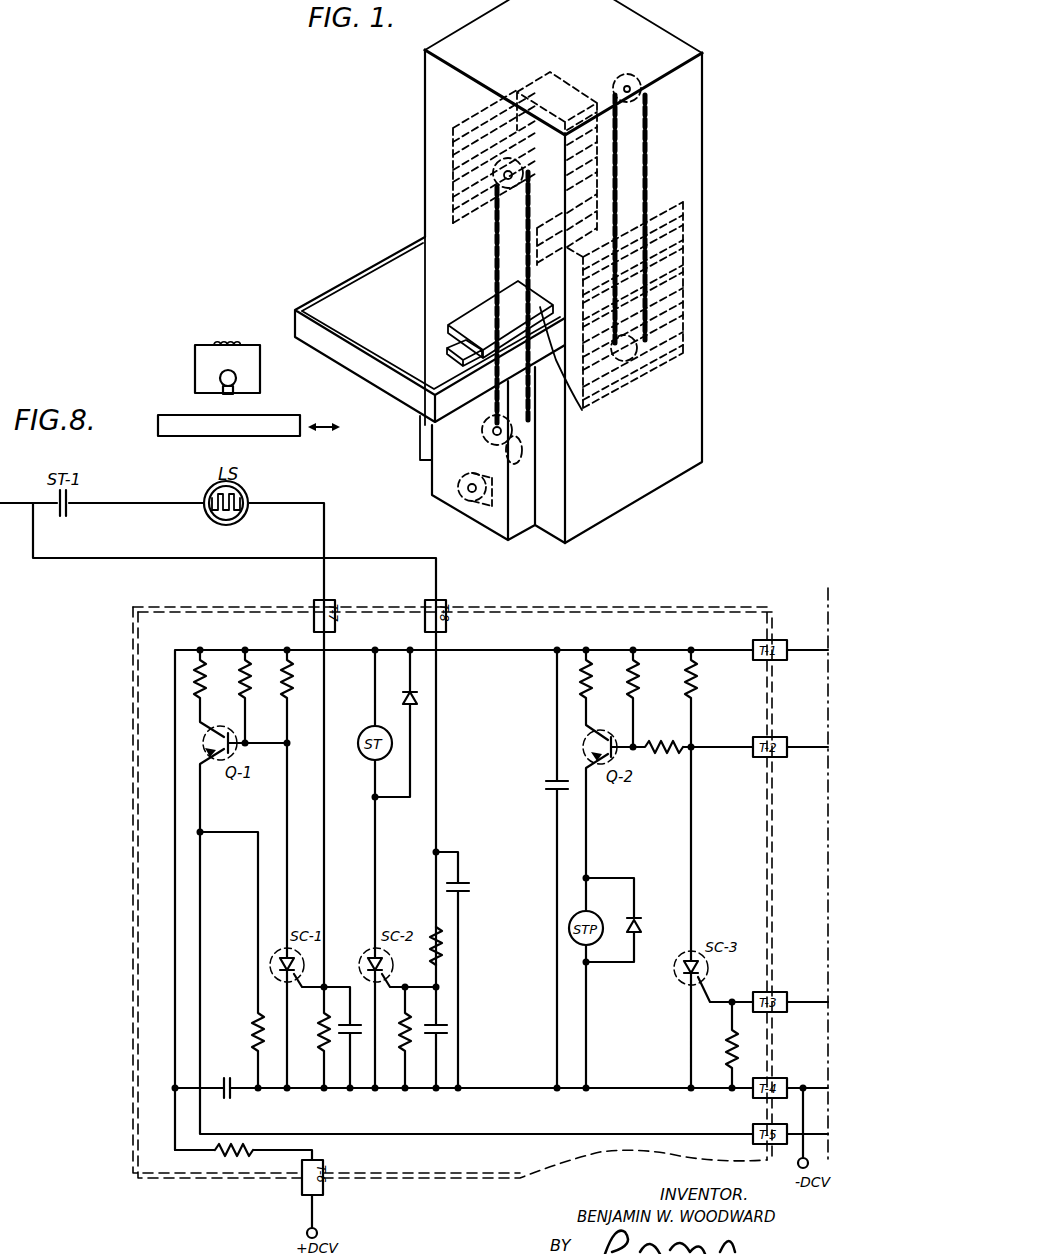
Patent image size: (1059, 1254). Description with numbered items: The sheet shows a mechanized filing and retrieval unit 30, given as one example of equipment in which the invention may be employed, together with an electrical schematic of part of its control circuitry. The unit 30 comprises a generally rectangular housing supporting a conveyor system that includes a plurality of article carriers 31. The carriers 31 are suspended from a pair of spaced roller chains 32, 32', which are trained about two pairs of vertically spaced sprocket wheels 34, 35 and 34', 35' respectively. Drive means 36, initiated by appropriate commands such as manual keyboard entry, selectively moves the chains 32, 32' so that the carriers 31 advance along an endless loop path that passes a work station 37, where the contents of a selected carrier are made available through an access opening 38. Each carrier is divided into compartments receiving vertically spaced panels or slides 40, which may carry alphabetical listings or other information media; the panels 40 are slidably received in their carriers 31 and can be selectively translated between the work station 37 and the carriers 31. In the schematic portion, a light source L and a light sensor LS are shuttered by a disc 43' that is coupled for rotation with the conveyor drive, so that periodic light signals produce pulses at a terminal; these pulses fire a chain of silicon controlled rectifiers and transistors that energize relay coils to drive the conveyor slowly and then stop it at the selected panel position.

In FIG. 1, the mechanized filing and retrieval unit 30 is at (400, 167).
In FIG. 1, the article carriers 31 is at (528, 84).
In FIG. 1, the roller chain 32 is at (480, 298).
In FIG. 1, the roller chain 32' is at (656, 220).
In FIG. 1, the sprocket wheel 34 is at (506, 152).
In FIG. 1, the sprocket wheel 34' is at (642, 71).
In FIG. 1, the sprocket wheel 35 is at (543, 440).
In FIG. 1, the sprocket wheel 35' is at (639, 376).
In FIG. 1, the drive means 36 is at (473, 508).
In FIG. 1, the work station 37 is at (382, 300).
In FIG. 1, the access opening 38 is at (576, 374).
In FIG. 1, the panels 40 is at (448, 332).
In FIG. 8, the disc 43' is at (247, 376).